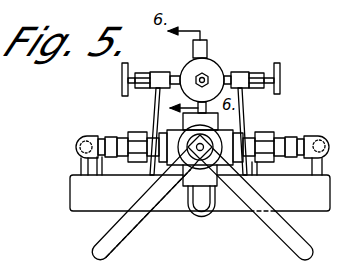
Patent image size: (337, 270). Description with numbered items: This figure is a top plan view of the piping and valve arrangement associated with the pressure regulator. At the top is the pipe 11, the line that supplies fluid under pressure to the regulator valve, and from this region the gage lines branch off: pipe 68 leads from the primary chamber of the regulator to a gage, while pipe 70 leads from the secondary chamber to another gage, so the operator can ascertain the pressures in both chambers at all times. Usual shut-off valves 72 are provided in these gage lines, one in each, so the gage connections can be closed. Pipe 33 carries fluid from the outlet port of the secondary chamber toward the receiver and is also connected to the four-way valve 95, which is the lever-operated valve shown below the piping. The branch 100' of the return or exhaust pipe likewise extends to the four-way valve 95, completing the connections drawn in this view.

The pipe 11 is at (210, 48).
The shut-off valve 72 is at (153, 72).
The pipe 33 is at (190, 98).
The pipe 70 is at (158, 115).
The pipe 68 is at (247, 117).
The four-way valve 95 is at (178, 214).
The branch 100' is at (212, 219).